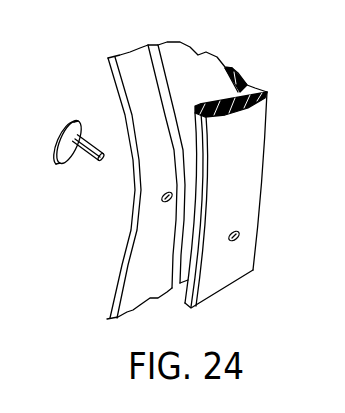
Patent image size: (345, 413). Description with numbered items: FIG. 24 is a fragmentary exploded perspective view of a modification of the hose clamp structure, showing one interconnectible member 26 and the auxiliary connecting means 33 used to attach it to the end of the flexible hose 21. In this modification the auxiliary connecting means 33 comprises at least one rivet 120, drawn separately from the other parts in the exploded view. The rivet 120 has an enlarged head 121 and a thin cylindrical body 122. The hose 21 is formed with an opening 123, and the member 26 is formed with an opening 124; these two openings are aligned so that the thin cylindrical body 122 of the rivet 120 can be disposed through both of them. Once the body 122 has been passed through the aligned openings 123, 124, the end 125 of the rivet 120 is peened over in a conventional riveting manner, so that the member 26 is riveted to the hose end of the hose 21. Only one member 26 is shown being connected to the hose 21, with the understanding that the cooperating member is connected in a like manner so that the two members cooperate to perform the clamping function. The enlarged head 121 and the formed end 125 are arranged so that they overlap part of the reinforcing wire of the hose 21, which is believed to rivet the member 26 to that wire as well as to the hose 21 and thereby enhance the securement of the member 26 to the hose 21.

The hose 21 is at (194, 62).
The member 26 is at (250, 166).
The auxiliary connecting means 33 is at (114, 223).
The rivet 120 is at (59, 145).
The enlarged head 121 is at (67, 122).
The thin cylindrical body 122 is at (108, 143).
The opening 123 is at (163, 201).
The opening 124 is at (238, 232).
The end 125 is at (108, 143).